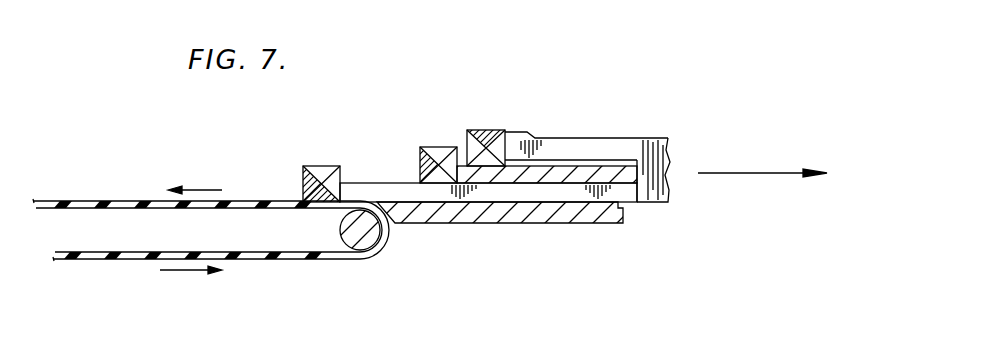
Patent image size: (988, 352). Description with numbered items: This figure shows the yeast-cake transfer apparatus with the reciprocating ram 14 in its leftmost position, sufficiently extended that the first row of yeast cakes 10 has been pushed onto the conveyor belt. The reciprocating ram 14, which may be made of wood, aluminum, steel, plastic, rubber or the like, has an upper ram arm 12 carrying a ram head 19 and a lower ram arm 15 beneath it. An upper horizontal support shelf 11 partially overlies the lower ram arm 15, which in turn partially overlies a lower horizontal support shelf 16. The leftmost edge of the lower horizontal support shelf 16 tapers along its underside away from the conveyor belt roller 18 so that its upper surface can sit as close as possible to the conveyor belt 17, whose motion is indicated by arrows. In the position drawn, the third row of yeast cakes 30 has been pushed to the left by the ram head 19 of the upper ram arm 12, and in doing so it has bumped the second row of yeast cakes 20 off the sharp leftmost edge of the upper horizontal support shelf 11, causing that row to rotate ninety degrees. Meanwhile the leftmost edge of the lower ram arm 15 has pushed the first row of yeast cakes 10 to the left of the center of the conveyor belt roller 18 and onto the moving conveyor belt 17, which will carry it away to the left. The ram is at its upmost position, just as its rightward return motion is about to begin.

The first row of yeast cakes 10 is at (313, 167).
The upper horizontal support shelf 11 is at (620, 173).
The upper ram arm 12 is at (595, 150).
The reciprocating ram 14 is at (665, 158).
The lower ram arm 15 is at (517, 195).
The lower horizontal support shelf 16 is at (455, 212).
The conveyor belt 17 is at (93, 202).
The conveyor belt roller 18 is at (373, 251).
The ram head 19 is at (518, 148).
The second row of yeast cakes 20 is at (420, 160).
The third row of yeast cakes 30 is at (468, 140).